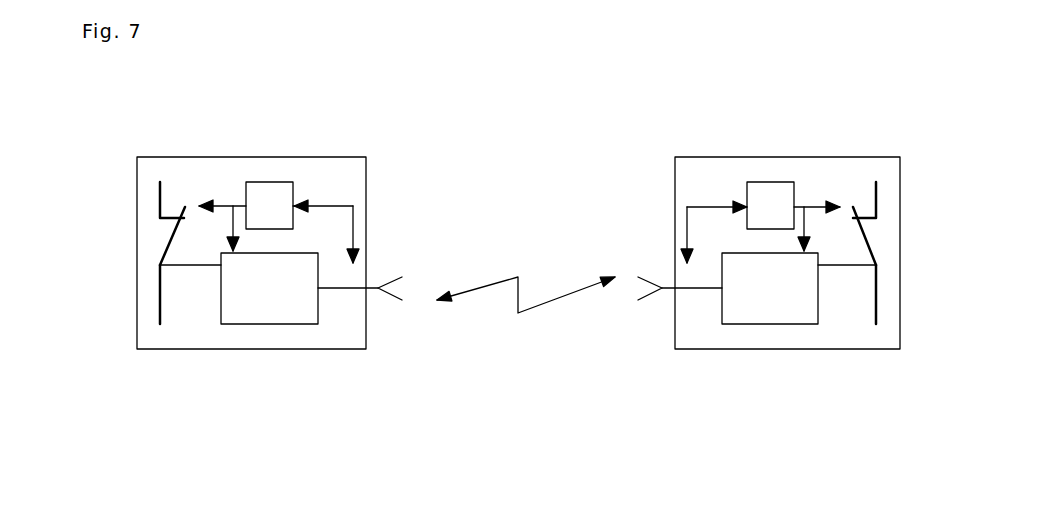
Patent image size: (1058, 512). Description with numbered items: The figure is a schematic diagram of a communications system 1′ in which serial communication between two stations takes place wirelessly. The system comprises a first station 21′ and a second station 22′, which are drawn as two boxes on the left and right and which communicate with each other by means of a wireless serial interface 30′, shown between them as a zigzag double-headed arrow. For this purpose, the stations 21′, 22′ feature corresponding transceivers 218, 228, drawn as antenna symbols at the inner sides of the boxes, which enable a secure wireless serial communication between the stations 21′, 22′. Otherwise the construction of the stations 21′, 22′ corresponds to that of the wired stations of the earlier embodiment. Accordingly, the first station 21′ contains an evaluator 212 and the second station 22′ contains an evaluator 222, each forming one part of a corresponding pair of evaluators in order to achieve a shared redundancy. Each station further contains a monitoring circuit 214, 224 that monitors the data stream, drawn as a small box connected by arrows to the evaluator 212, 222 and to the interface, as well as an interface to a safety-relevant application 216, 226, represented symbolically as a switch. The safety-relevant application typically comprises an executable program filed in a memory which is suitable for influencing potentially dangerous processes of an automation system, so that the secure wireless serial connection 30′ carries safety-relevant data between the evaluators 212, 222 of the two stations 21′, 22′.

The communications system 1′ is at (527, 55).
The station 21′ is at (185, 349).
The station 22′ is at (853, 349).
The evaluator 212 is at (270, 324).
The monitoring circuit 214 is at (284, 157).
The interface to a safety-relevant application 216 is at (167, 247).
The transceiver 218 is at (388, 282).
The evaluator 222 is at (743, 324).
The monitoring circuit 224 is at (760, 182).
The interface to a safety-relevant application 226 is at (870, 240).
The transceiver 228 is at (653, 282).
The wireless serial interface 30′ is at (517, 303).